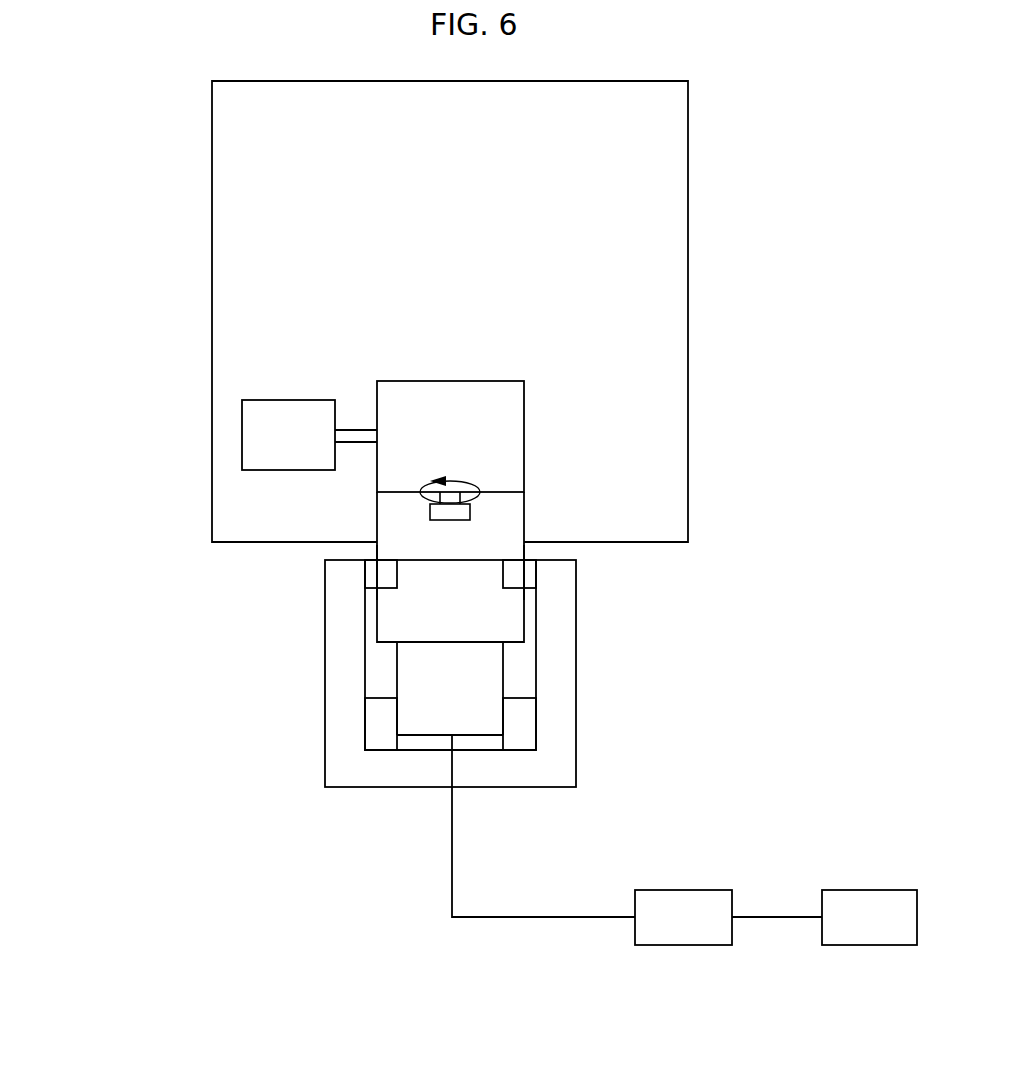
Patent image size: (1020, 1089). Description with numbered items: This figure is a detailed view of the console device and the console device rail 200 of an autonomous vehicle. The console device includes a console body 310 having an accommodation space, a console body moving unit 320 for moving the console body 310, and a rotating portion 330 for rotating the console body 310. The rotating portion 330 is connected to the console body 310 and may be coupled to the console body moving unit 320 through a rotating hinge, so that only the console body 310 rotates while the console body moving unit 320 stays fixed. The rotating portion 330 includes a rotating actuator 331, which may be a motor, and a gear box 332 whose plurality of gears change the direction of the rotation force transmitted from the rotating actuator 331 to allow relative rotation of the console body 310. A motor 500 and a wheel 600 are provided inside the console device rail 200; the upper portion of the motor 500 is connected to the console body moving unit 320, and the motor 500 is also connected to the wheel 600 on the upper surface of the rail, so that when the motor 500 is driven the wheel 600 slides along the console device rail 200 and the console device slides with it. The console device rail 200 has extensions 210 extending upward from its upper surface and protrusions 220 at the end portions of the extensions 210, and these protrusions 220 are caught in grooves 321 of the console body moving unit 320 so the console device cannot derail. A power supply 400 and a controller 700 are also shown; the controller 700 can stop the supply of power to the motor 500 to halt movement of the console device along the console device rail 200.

The console device rail 200 is at (353, 773).
The extensions 210 is at (340, 667).
The protrusions 220 is at (367, 568).
The console body 310 is at (655, 198).
The console body moving unit 320 is at (502, 517).
The grooves 321 is at (367, 583).
The rotating portion 330 is at (102, 338).
The rotating actuator 331 is at (257, 433).
The gear box 332 is at (388, 393).
The power supply 400 is at (637, 840).
The motor 500 is at (480, 713).
The wheel 600 is at (373, 722).
The controller 700 is at (869, 917).